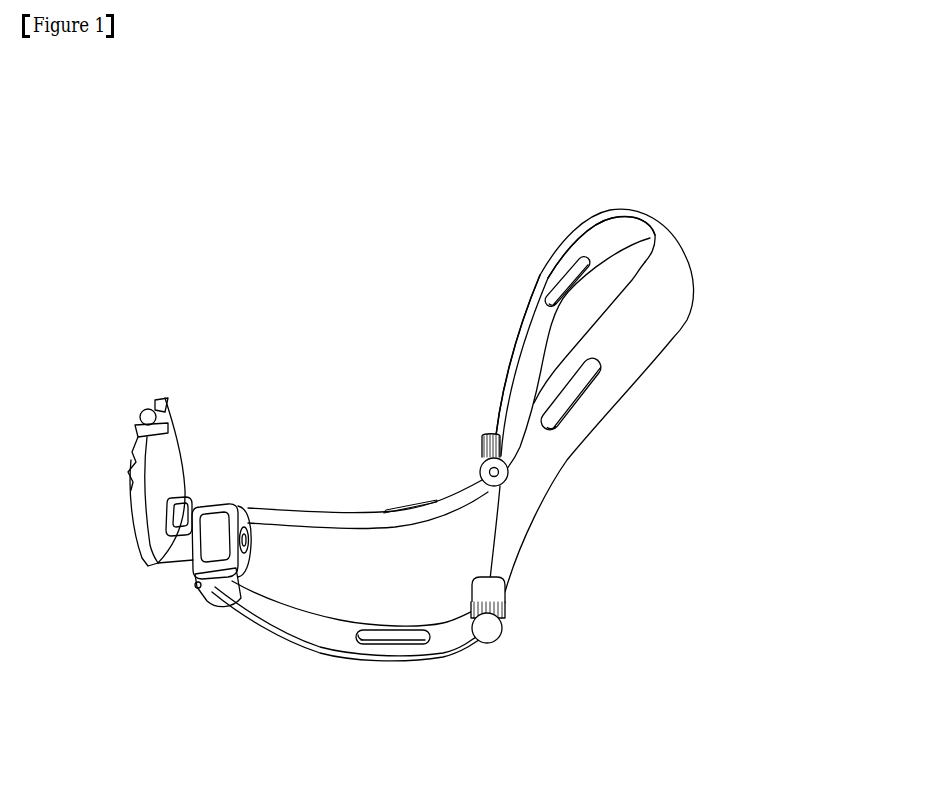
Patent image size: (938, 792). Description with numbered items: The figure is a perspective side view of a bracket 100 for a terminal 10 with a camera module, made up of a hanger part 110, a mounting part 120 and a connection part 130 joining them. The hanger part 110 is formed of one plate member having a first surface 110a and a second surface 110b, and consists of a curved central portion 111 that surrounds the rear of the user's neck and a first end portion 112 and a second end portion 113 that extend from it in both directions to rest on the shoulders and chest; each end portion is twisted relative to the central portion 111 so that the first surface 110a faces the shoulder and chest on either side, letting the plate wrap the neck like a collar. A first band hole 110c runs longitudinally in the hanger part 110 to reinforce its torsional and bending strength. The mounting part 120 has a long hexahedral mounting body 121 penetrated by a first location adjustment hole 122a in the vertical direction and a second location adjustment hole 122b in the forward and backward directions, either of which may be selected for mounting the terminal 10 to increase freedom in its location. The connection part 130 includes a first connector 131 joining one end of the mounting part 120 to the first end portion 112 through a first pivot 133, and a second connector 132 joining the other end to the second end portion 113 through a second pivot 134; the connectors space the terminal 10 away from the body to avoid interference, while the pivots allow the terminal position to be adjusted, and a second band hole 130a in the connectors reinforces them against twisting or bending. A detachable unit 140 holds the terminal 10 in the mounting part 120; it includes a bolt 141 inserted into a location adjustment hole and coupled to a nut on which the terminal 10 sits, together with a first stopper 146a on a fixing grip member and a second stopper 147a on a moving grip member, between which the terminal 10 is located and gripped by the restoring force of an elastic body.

The bracket for a terminal 100 is at (703, 128).
The terminal 10 is at (128, 493).
The hanger part 110 is at (610, 370).
The first surface 110a is at (590, 240).
The second surface 110b is at (655, 338).
The first band hole 110c is at (575, 410).
The central portion 111 is at (630, 206).
The first end portion 112 is at (500, 394).
The second end portion 113 is at (537, 528).
The mounting part 120 is at (215, 570).
The mounting body 121 is at (197, 587).
The first location adjustment hole 122a is at (242, 508).
The second location adjustment hole 122b is at (225, 592).
The connection part 130 is at (350, 652).
The second band hole 130a is at (392, 646).
The first connector 131 is at (362, 505).
The second connector 132 is at (312, 652).
The first pivot 133 is at (480, 456).
The second pivot 134 is at (496, 642).
The detachable unit 140 is at (148, 484).
The bolt 141 is at (251, 540).
The first stopper 146a is at (190, 504).
The second stopper 147a is at (136, 420).